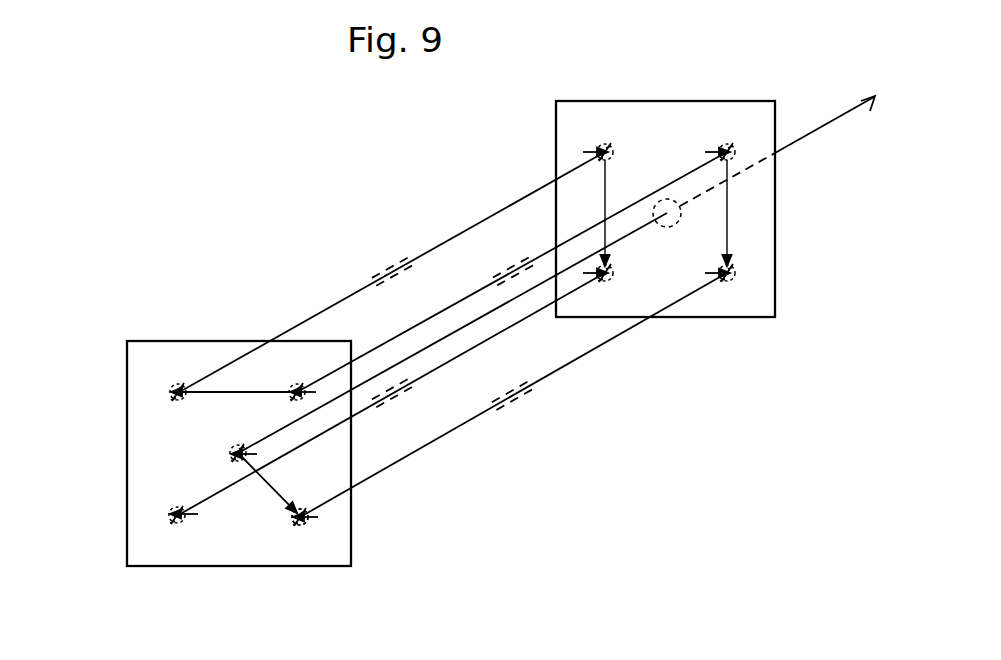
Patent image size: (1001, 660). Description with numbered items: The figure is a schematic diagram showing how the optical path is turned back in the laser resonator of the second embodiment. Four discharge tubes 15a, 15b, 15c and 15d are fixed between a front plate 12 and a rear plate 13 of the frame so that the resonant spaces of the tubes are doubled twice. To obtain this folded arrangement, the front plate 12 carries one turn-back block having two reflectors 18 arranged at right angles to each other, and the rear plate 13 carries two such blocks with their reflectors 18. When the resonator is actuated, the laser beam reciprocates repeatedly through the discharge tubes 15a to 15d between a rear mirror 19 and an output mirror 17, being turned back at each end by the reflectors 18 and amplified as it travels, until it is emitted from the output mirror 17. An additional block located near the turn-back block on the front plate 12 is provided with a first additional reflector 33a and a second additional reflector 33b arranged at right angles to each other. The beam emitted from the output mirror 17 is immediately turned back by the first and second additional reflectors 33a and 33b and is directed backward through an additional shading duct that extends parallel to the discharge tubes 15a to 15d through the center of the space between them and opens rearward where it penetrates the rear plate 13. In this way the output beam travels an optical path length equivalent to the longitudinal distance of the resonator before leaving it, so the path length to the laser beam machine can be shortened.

The front plate 12 is at (170, 360).
The rear plate 13 is at (565, 120).
The discharge tube 15a is at (580, 363).
The discharge tube 15b is at (548, 248).
The discharge tube 15c is at (345, 296).
The discharge tube 15d is at (370, 418).
The output mirror 17 is at (310, 520).
The reflector 18 is at (606, 141).
The rear mirror 19 is at (167, 516).
The first additional reflector 33a is at (295, 528).
The second additional reflector 33b is at (230, 455).